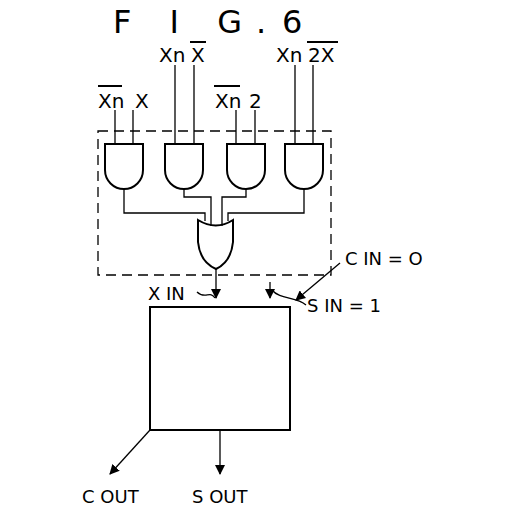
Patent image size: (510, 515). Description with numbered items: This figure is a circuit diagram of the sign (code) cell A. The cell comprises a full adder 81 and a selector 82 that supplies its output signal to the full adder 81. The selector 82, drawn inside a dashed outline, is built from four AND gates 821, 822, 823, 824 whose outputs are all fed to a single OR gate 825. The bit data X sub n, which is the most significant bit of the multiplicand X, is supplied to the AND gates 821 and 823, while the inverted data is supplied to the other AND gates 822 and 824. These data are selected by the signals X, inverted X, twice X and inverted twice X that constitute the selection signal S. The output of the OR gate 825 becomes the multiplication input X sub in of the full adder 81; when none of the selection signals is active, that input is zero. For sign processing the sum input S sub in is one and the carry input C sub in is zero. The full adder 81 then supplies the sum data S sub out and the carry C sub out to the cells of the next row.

The selector 82 is at (98, 160).
The AND gate 821 is at (310, 189).
The AND gate 822 is at (250, 188).
The AND gate 823 is at (172, 186).
The AND gate 824 is at (105, 178).
The OR gate 825 is at (199, 250).
The full adder 81 is at (150, 413).